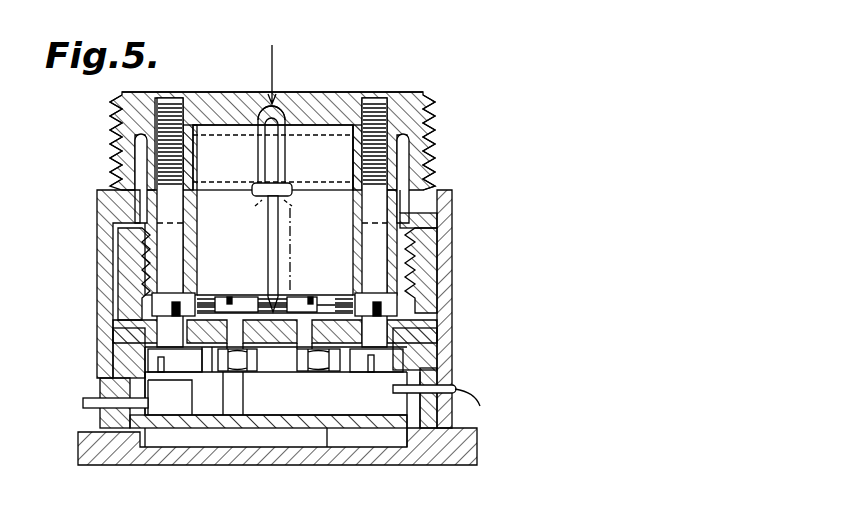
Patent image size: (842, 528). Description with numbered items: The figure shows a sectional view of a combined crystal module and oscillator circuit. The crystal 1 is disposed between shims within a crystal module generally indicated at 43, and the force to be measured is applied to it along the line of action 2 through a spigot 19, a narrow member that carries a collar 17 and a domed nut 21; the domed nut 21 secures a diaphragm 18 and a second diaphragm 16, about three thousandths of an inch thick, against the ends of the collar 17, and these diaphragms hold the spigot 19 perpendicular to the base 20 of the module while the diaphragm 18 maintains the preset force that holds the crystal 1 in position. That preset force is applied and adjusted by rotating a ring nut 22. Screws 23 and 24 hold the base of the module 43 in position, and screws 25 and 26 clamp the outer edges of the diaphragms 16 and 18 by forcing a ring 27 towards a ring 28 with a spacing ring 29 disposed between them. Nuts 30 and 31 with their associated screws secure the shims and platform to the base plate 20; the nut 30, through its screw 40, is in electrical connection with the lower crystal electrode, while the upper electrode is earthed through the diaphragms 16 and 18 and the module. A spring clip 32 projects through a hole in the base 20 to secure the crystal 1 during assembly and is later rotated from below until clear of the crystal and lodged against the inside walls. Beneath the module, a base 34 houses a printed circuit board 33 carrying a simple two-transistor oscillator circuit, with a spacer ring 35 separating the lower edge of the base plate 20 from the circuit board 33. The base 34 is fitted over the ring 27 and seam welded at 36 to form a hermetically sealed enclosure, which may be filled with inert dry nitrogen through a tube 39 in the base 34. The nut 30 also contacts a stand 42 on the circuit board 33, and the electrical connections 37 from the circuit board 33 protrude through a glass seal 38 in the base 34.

The crystal 1 is at (266, 235).
The line of action 2 is at (280, 74).
The second diaphragm 16 is at (212, 130).
The collar 17 is at (285, 160).
The diaphragm 18 is at (222, 183).
The spigot 19 is at (303, 201).
The base 20 is at (425, 342).
The domed nut 21 is at (287, 112).
The ring nut 22 is at (420, 270).
The screw 23 is at (385, 364).
The screw 24 is at (150, 360).
The screw 25 is at (392, 303).
The screw 26 is at (152, 302).
The ring 27 is at (428, 93).
The ring 28 is at (440, 222).
The spacing ring 29 is at (403, 151).
The nut 30 is at (258, 371).
The nut 31 is at (312, 371).
The spring clip 32 is at (292, 246).
The printed circuit board 33 is at (328, 430).
The base 34 is at (477, 453).
The spacer ring 35 is at (421, 402).
The seam weld 36 is at (448, 192).
The electrical connections 37 is at (88, 410).
The glass seal 38 is at (100, 390).
The tube 39 is at (458, 390).
The screw 40 is at (235, 300).
The stand 42 is at (243, 405).
The crystal module 43 is at (100, 154).